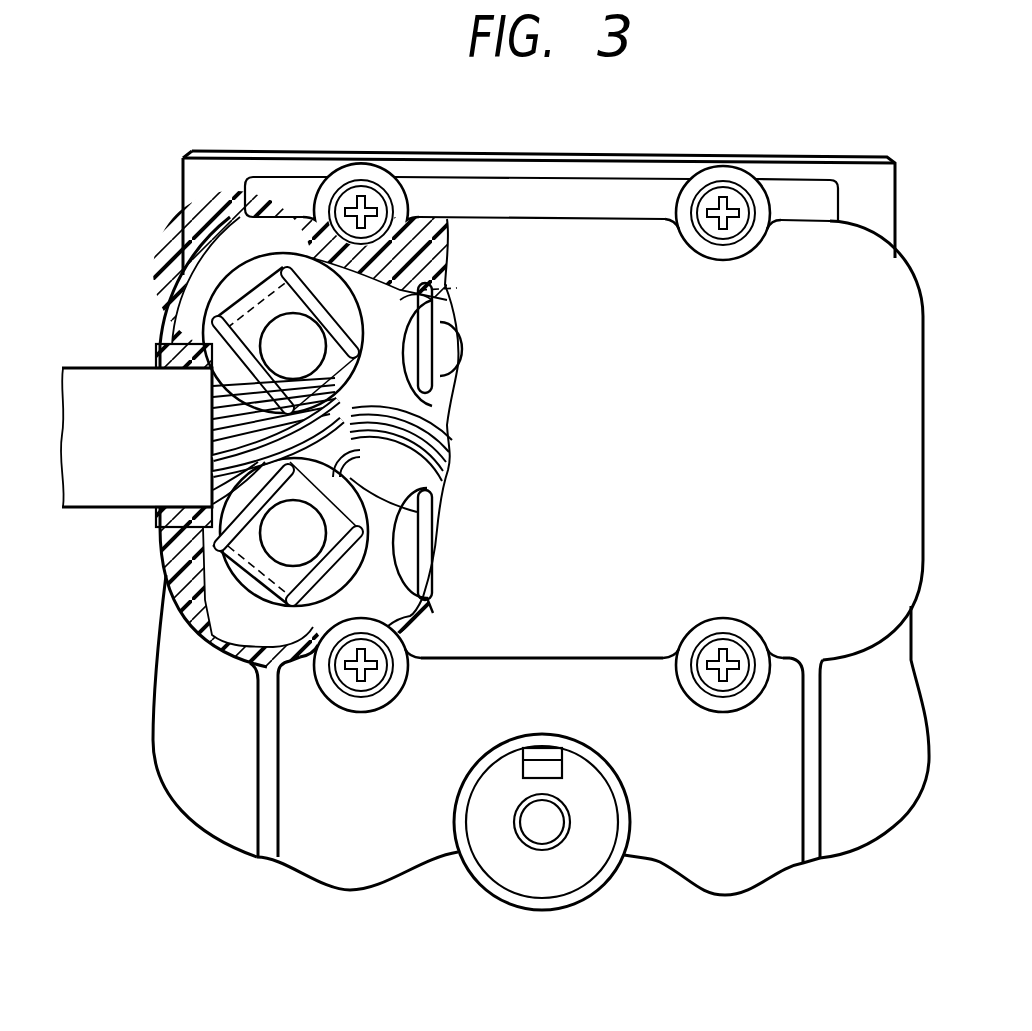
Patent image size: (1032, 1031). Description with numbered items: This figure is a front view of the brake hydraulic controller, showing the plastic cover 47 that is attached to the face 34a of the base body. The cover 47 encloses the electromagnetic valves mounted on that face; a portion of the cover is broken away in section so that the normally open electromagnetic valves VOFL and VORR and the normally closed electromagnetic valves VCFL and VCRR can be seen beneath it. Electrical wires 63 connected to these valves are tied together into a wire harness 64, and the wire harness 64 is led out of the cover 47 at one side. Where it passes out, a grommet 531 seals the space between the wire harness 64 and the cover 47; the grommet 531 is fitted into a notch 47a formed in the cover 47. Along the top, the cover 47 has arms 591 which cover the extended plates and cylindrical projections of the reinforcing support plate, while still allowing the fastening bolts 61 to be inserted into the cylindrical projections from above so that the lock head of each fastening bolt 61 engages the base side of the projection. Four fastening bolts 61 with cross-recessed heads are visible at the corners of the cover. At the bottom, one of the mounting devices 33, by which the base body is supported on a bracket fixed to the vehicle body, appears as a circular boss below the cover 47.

The mounting device 33 is at (607, 814).
The face 34a is at (383, 327).
The cover 47 is at (603, 458).
The notch 47a is at (178, 370).
The grommet 531 is at (153, 517).
The arm 591 is at (278, 188).
The fastening bolt 61 is at (362, 197).
The electrical wire 63 is at (397, 477).
The wire harness 64 is at (88, 380).
The normally open electromagnetic valve VORR is at (405, 298).
The normally open electromagnetic valve VOFL is at (242, 292).
The normally closed electromagnetic valve VCFL is at (237, 586).
The normally closed electromagnetic valve VCRR is at (391, 568).